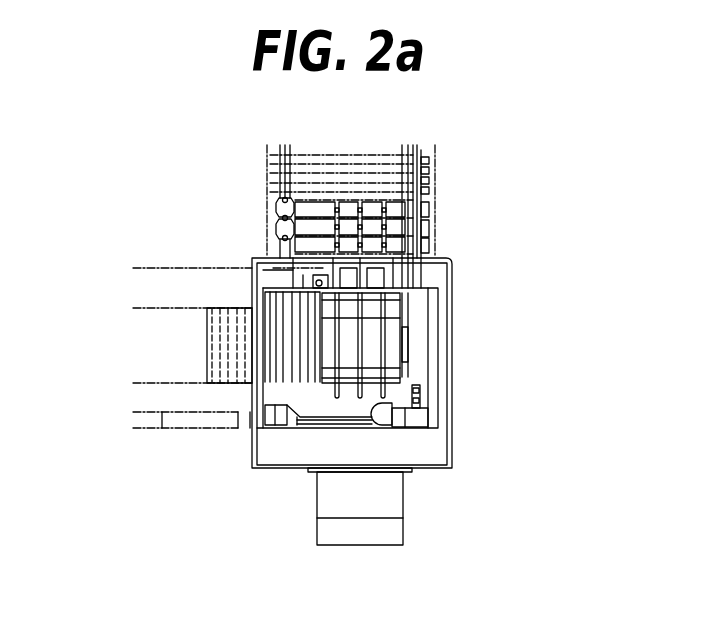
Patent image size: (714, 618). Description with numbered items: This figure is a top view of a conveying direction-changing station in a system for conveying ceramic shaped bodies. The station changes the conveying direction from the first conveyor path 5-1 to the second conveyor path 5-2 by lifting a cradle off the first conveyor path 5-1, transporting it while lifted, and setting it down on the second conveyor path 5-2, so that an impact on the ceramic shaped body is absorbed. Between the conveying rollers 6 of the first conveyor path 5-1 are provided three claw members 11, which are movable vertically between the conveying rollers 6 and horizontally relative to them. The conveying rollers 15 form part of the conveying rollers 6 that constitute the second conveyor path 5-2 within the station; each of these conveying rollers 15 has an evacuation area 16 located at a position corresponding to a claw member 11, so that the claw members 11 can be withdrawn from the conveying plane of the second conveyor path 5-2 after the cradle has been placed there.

The first conveyor path 5-1 is at (170, 262).
The second conveyor path 5-2 is at (443, 190).
The conveying rollers 15 is at (313, 207).
The evacuation area 16 is at (357, 203).
The conveying rollers 6 is at (283, 372).
The claw members 11 is at (333, 378).